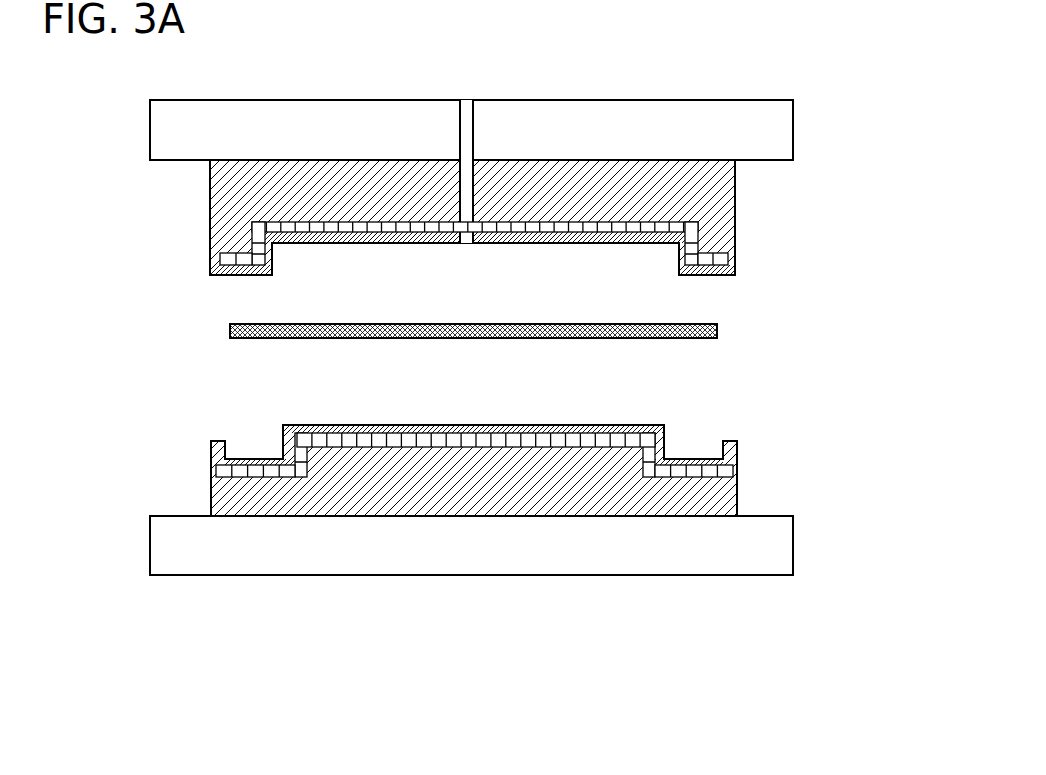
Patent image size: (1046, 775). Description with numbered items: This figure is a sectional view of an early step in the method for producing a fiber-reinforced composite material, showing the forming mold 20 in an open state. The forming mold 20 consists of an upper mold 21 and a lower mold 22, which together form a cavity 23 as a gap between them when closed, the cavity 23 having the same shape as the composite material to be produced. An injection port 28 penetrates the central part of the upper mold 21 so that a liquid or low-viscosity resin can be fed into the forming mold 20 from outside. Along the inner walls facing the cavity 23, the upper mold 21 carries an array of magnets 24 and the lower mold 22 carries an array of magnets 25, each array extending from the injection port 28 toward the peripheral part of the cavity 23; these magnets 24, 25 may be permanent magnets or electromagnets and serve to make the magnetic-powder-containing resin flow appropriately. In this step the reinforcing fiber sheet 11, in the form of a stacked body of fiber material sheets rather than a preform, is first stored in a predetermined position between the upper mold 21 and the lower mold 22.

The forming mold 20 is at (855, 72).
The upper mold 21 is at (737, 210).
The lower mold 22 is at (738, 494).
The cavity 23 is at (710, 447).
The magnets 24 is at (596, 218).
The magnets 25 is at (578, 447).
The injection port 28 is at (463, 112).
The reinforcing fiber sheet 11 is at (718, 327).